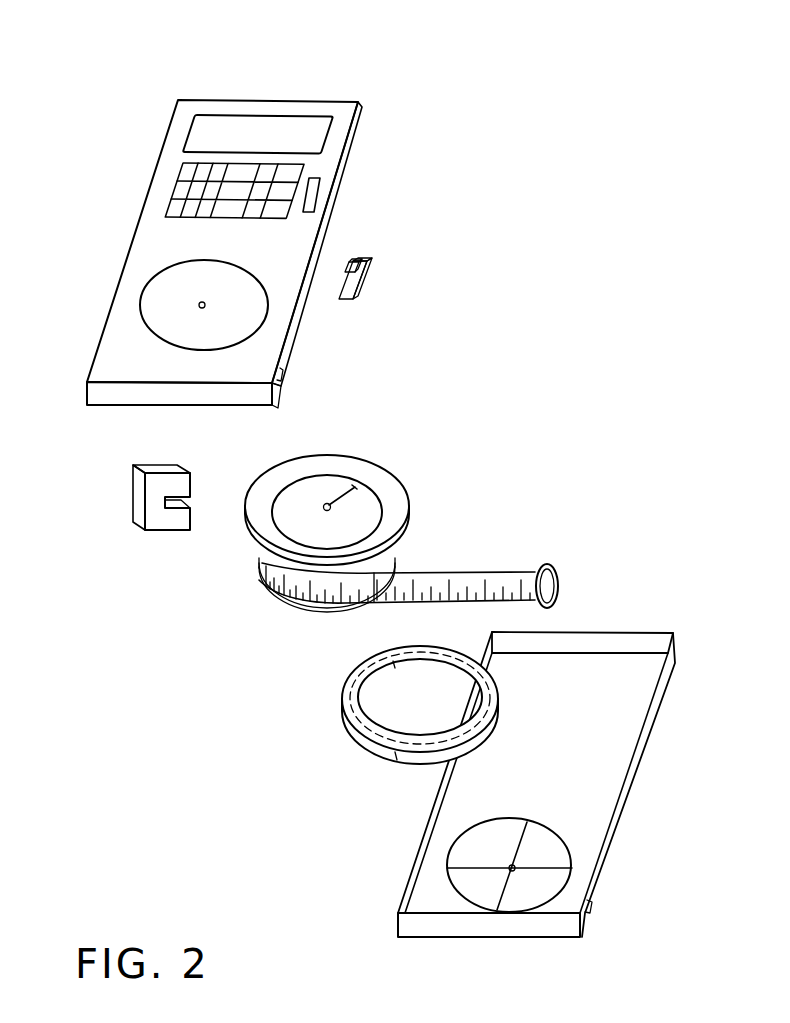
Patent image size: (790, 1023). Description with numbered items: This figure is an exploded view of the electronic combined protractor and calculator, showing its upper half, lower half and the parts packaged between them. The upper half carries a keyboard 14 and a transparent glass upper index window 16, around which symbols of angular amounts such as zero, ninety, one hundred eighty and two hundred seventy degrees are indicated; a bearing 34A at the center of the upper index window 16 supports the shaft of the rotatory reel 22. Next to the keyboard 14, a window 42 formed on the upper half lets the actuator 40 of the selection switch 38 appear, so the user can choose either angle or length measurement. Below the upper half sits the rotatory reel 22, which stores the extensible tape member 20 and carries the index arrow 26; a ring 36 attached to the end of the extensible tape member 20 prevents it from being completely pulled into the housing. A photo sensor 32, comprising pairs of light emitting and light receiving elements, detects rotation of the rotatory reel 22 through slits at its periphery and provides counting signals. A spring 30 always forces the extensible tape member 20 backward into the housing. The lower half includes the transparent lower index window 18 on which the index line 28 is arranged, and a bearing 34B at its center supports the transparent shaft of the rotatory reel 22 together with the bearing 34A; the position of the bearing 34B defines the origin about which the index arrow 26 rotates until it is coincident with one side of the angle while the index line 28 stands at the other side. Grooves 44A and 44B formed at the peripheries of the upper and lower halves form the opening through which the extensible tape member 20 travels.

The keyboard 14 is at (285, 122).
The upper index window 16 is at (178, 283).
The bearing 34A is at (200, 307).
The window 42 is at (320, 182).
The actuator 40 is at (355, 253).
The selection switch 38 is at (365, 277).
The groove 44A is at (278, 377).
The photo sensor 32 is at (142, 502).
The rotatory reel 22 is at (388, 490).
The index arrow 26 is at (333, 508).
The extensible tape member 20 is at (462, 580).
The ring 36 is at (557, 567).
The spring 30 is at (342, 700).
The lower index window 18 is at (478, 888).
The index line 28 is at (523, 835).
The bearing 34B is at (510, 866).
The groove 44B is at (593, 895).